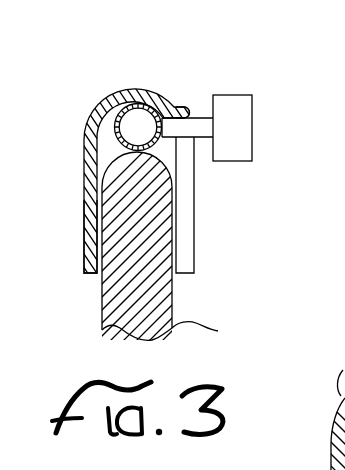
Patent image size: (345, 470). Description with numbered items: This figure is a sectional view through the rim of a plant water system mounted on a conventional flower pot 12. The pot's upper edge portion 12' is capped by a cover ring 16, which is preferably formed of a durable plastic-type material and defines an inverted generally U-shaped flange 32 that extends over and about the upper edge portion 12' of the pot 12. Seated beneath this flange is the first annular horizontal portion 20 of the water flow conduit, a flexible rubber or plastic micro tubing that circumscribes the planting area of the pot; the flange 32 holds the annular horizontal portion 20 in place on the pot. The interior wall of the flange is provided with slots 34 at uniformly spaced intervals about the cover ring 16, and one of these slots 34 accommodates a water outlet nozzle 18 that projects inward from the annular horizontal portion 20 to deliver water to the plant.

The flower pot 12 is at (183, 265).
The upper edge portion 12' is at (55, 197).
The cover ring 16 is at (135, 89).
The water outlet nozzle 18 is at (241, 104).
The first annular horizontal portion 20 is at (110, 125).
The inverted generally U-shaped flange 32 is at (188, 200).
The slots 34 is at (186, 117).